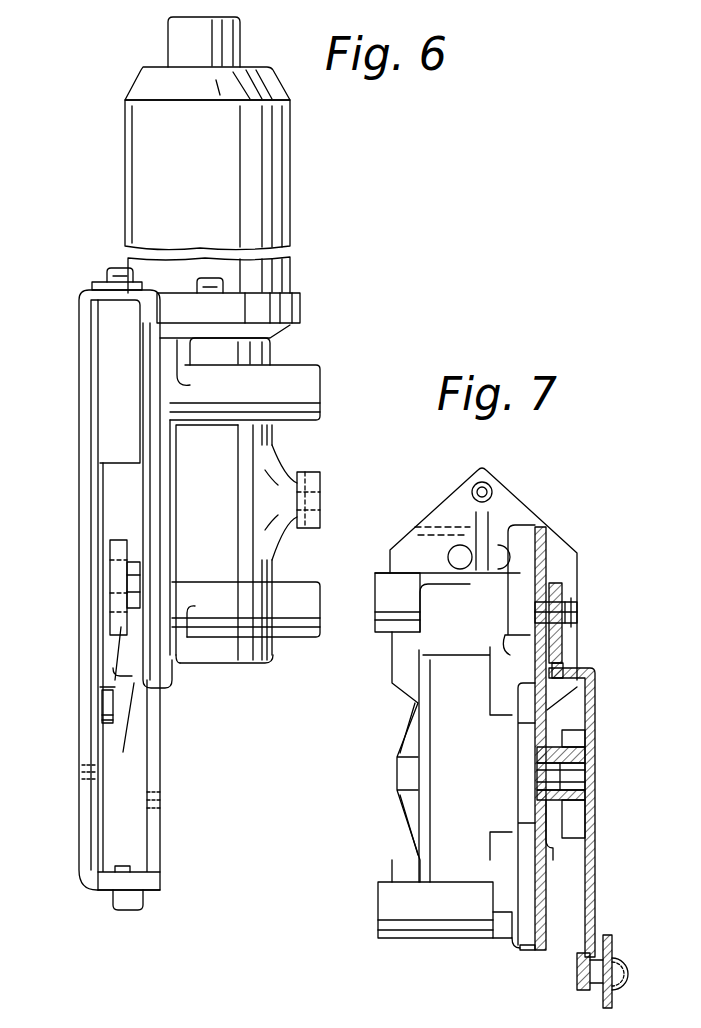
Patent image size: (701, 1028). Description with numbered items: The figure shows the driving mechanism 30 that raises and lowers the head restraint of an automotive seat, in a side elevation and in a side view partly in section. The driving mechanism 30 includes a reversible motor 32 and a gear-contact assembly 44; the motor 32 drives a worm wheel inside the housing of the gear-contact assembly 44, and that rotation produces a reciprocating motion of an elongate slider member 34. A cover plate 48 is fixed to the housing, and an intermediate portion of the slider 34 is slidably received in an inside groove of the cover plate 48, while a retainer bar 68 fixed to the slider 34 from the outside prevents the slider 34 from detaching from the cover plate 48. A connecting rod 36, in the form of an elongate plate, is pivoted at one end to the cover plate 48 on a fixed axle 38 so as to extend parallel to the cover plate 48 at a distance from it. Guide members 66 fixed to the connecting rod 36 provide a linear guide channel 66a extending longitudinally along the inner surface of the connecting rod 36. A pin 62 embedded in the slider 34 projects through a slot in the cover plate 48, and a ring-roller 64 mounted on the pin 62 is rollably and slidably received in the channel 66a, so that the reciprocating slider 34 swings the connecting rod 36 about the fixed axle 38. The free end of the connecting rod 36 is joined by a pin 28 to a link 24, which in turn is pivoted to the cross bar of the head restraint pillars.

In FIG. 6, the reversible motor 32 is at (281, 216).
In FIG. 6, the driving mechanism 30 is at (330, 302).
In FIG. 6, the gear-contact assembly 44 is at (290, 440).
In FIG. 7, the gear-contact assembly 44 is at (392, 826).
In FIG. 6, the cover plate 48 is at (140, 400).
In FIG. 7, the cover plate 48 is at (535, 950).
In FIG. 6, the retainer bar 68 is at (80, 508).
In FIG. 6, the elongate slider member 34 is at (160, 792).
In FIG. 6, the ring-roller 64 is at (112, 590).
In FIG. 7, the ring-roller 64 is at (570, 748).
In FIG. 6, the pin 62 is at (135, 580).
In FIG. 7, the pin 62 is at (570, 775).
In FIG. 6, the guide members 66 is at (124, 706).
In FIG. 7, the guide members 66 is at (575, 725).
In FIG. 7, the linear guide channel 66a is at (575, 822).
In FIG. 6, the connecting rod 36 is at (105, 700).
In FIG. 7, the connecting rod 36 is at (595, 902).
In FIG. 7, the fixed axle 38 is at (557, 612).
In FIG. 7, the pin 28 is at (615, 962).
In FIG. 7, the link 24 is at (615, 995).